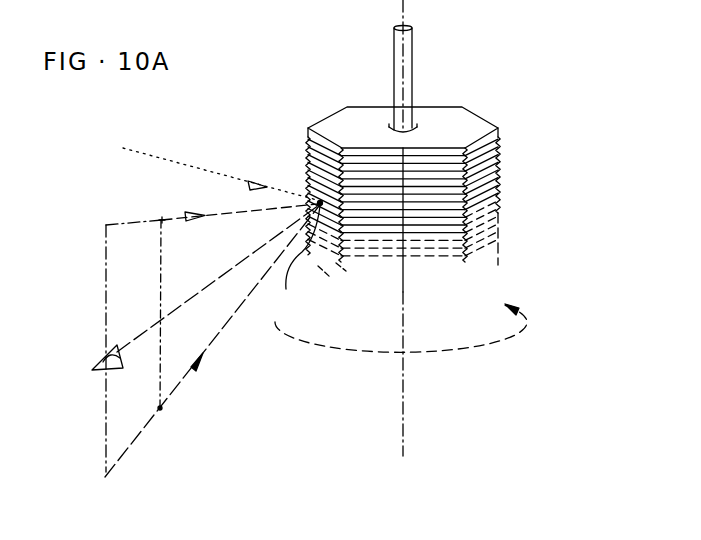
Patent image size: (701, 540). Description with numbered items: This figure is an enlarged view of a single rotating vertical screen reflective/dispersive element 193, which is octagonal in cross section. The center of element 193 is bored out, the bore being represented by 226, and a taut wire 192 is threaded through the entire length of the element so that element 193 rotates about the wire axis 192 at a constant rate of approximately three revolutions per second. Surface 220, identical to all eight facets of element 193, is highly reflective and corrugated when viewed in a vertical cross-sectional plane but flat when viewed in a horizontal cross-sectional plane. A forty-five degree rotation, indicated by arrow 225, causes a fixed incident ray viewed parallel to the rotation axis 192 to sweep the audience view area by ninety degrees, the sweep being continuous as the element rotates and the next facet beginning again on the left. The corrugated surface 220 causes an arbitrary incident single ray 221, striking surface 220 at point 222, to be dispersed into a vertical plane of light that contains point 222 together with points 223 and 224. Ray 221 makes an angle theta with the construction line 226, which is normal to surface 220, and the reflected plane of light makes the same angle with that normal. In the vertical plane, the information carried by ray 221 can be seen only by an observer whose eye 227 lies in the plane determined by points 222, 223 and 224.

The taut wire 192 is at (412, 40).
The rotating vertical screen reflective/dispersive element 193 is at (409, 178).
The reflective/dispersive surface 220 is at (308, 160).
The incident single ray 221 is at (162, 157).
The incident point 222 is at (311, 255).
The point 223 is at (161, 217).
The point 224 is at (161, 409).
The rotation arrow 225 is at (467, 348).
The center bore 226 is at (414, 127).
The observer's eye 227 is at (105, 353).